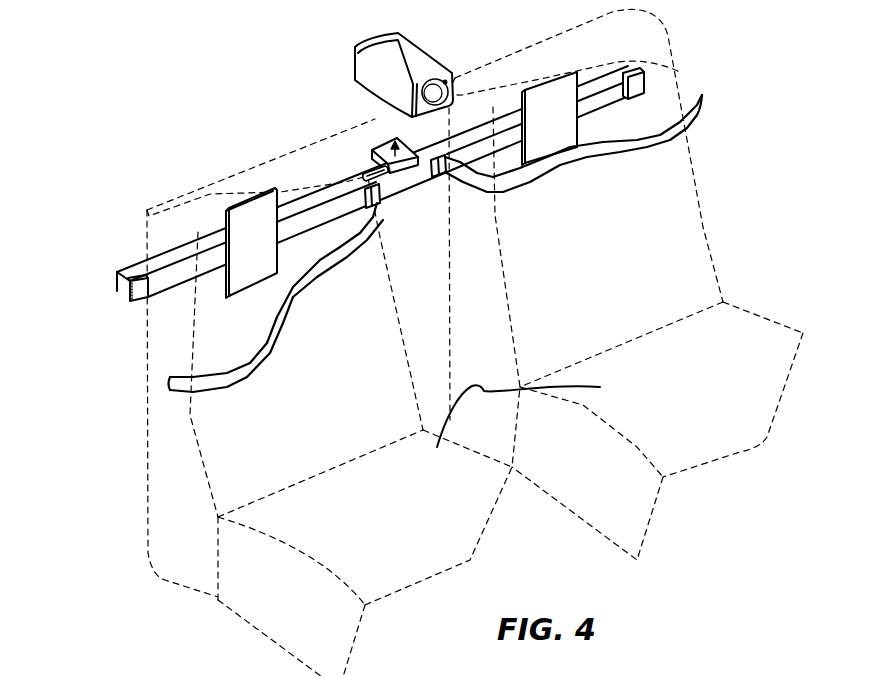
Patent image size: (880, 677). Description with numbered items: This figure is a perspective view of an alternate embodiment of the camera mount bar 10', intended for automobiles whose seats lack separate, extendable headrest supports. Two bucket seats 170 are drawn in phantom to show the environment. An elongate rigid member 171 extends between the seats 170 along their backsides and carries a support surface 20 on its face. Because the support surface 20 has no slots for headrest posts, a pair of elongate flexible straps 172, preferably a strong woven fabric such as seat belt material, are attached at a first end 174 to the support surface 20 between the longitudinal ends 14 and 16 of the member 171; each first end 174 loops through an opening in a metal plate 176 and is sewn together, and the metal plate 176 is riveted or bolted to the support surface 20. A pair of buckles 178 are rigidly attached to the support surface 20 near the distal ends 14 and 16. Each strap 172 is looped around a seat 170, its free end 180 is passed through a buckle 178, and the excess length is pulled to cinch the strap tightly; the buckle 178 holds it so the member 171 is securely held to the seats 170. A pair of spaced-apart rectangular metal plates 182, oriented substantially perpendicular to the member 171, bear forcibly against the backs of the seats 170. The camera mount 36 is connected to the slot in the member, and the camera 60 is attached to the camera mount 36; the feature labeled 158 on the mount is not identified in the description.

The camera mount bar 10' is at (421, 231).
The longitudinal end 14 is at (640, 61).
The longitudinal end 16 is at (117, 283).
The support surface 20 is at (397, 187).
The camera mount 36 is at (373, 150).
The camera 60 is at (393, 37).
The release indicator 158 is at (392, 140).
The bucket seat 170 is at (510, 489).
The elongate rigid member 171 is at (613, 64).
The elongate flexible strap 172 is at (342, 264).
The first end 174 is at (380, 200).
The metal plate 176 is at (364, 173).
The buckle 178 is at (138, 300).
The free end 180 is at (703, 113).
The plate 182 is at (250, 222).